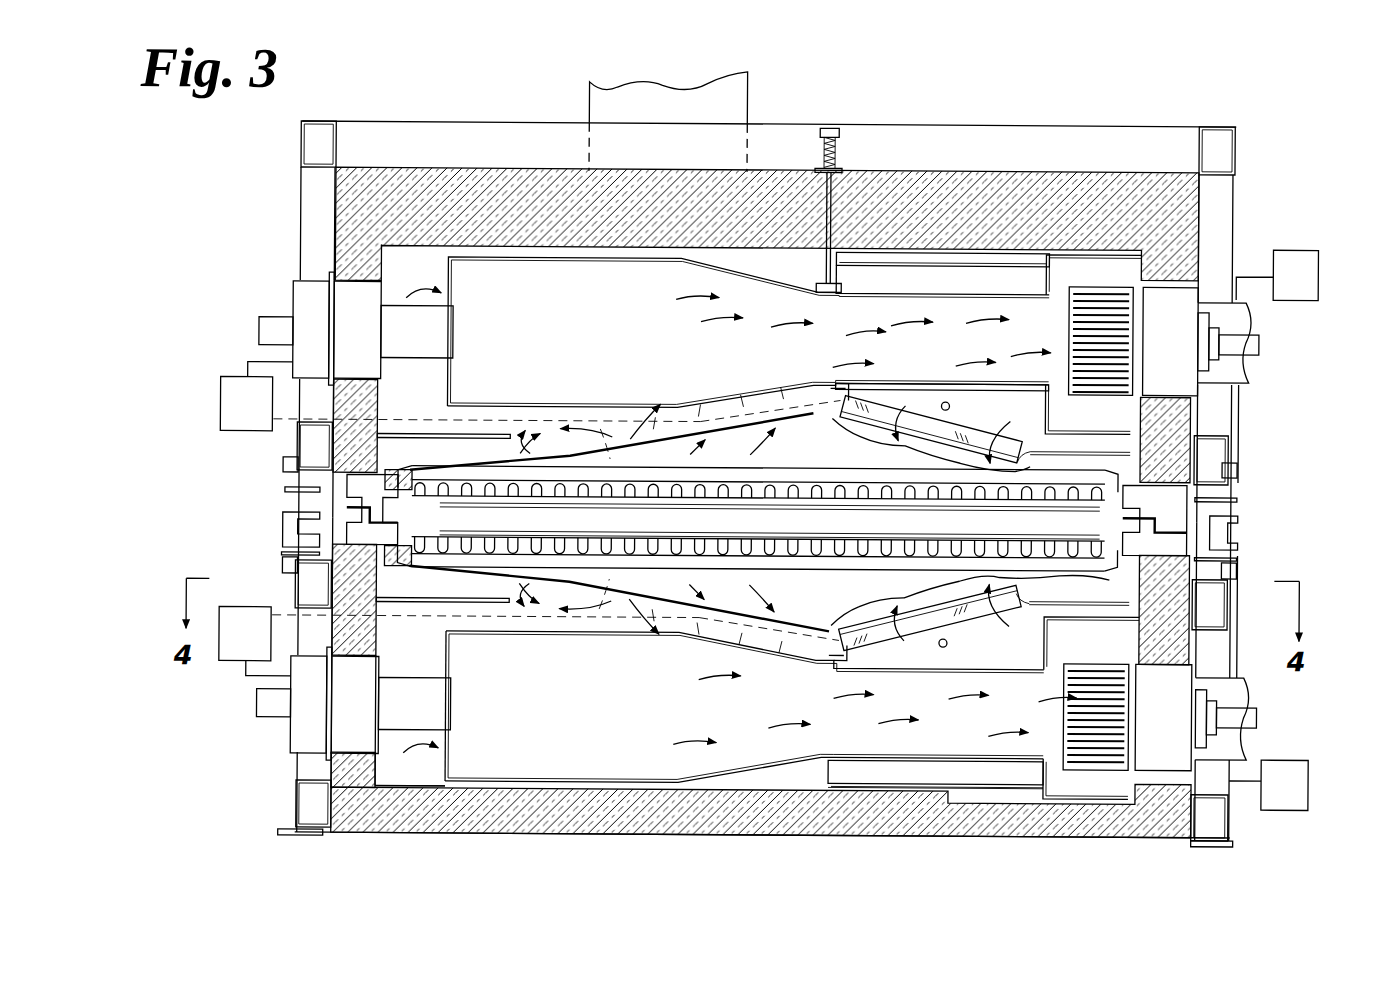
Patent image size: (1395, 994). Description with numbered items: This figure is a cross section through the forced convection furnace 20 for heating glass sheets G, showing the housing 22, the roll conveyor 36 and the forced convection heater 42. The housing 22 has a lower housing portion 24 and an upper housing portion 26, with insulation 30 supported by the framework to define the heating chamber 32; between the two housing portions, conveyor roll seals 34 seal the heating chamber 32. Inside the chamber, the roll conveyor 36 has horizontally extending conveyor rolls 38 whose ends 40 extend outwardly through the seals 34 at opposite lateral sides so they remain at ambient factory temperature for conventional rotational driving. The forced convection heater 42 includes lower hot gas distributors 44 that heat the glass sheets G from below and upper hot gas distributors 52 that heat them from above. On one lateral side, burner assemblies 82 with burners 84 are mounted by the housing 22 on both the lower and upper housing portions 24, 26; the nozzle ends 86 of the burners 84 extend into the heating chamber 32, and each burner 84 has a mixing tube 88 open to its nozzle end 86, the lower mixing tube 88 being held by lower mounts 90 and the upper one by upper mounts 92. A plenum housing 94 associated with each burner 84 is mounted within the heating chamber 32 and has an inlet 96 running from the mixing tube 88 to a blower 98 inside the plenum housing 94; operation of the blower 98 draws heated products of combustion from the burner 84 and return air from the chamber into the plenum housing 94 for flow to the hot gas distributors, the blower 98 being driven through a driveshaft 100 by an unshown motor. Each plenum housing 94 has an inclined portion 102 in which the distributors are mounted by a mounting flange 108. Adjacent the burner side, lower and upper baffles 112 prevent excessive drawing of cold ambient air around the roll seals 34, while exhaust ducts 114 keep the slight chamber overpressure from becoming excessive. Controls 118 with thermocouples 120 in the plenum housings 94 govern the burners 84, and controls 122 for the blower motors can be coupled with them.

The forced convection furnace 20 is at (1259, 112).
The housing 22 is at (1207, 166).
The lower housing portion 24 is at (1275, 688).
The upper housing portion 26 is at (1262, 194).
The insulation 30 is at (804, 200).
The heating chamber 32 is at (774, 245).
The conveyor roll seals 34 is at (312, 482).
The roll conveyor 36 is at (418, 622).
The conveyor rolls 38 is at (403, 469).
The ends of the conveyor rolls 40 is at (320, 516).
The forced convection heater 42 is at (800, 772).
The lower hot gas distributors 44 is at (706, 625).
The upper hot gas distributors 52 is at (703, 438).
The burner assemblies 82 is at (246, 294).
The burners 84 is at (293, 293).
The nozzle ends 86 is at (462, 327).
The mixing tube 88 is at (503, 262).
The lower mounts 90 is at (552, 792).
The upper mounts 92 is at (871, 280).
The plenum housing 94 is at (973, 263).
The inlet 96 is at (911, 292).
The blower 98 is at (1086, 290).
The driveshaft 100 is at (1250, 341).
The inclined portion 102 is at (832, 470).
The mounting flange 108 is at (843, 403).
The lower and upper baffles 112 is at (500, 436).
The exhaust ducts 114 is at (585, 93).
The controls 118 is at (230, 380).
The thermocouples 120 is at (946, 400).
The controls 122 is at (1293, 253).
The glass sheets G is at (594, 399).